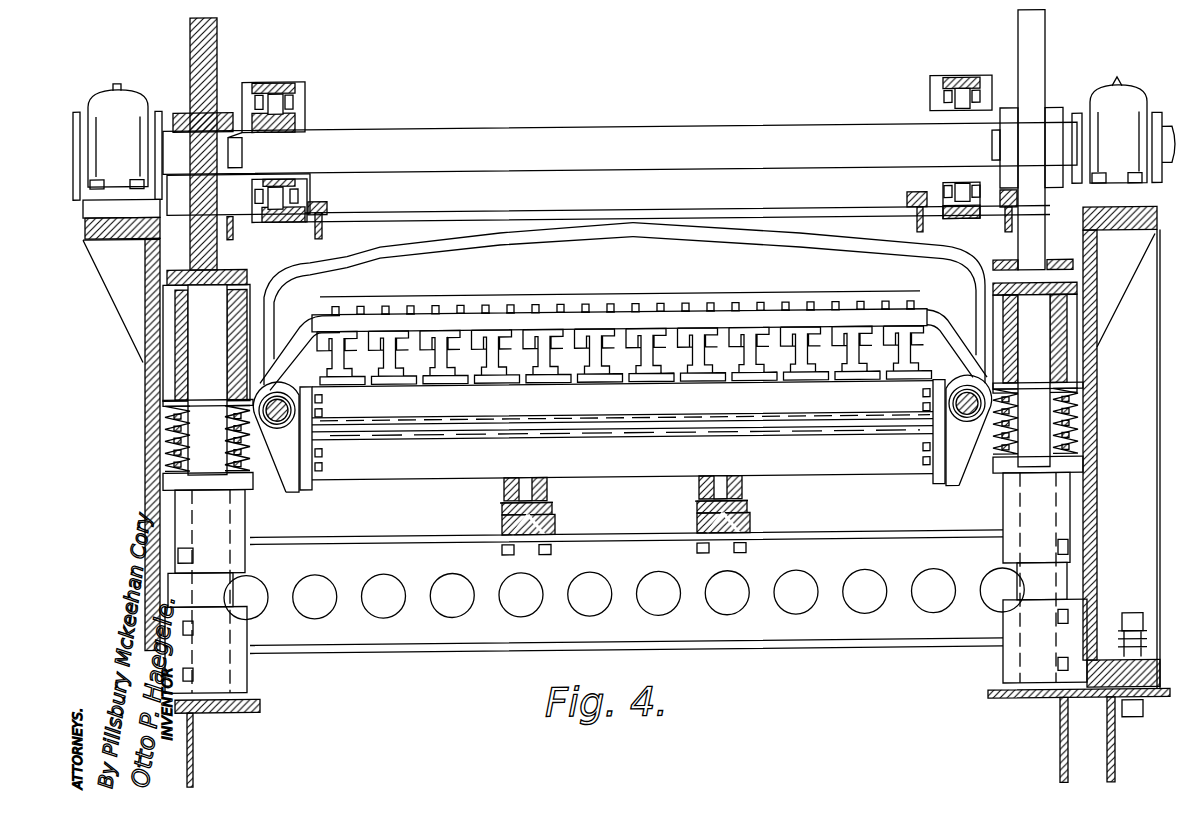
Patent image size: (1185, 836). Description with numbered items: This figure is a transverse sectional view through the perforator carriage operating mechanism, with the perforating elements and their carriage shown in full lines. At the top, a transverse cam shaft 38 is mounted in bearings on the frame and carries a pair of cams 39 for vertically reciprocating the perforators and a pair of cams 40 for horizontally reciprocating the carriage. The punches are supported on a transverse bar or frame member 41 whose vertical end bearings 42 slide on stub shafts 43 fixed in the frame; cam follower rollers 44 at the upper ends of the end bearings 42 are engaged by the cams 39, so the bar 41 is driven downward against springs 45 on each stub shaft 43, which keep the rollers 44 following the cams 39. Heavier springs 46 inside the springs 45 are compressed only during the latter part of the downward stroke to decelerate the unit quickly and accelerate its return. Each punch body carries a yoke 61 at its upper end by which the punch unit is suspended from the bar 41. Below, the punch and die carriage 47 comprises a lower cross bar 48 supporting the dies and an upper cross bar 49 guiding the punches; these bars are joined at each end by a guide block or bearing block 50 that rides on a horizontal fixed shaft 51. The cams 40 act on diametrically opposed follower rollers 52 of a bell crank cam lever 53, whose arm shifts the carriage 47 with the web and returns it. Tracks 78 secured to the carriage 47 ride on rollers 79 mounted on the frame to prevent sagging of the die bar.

The transverse cam shaft 38 is at (596, 142).
The cams 39 is at (208, 42).
The cams 40 is at (292, 118).
The transverse bar or frame member 41 is at (624, 272).
The vertical end bearings 42 is at (240, 343).
The stub shafts 43 is at (200, 373).
The cam follower rollers 44 is at (250, 288).
The springs 45 is at (165, 438).
The heavier springs 46 is at (163, 456).
The punch and die carriage 47 is at (424, 473).
The lower cross bar 48 is at (382, 470).
The upper cross bar 49 is at (388, 406).
The guide block or bearing block 50 is at (296, 470).
The horizontal fixed shafts 51 is at (277, 428).
The follower rollers 52 is at (278, 98).
The bell crank cam lever 53 is at (949, 74).
The yoke 61 is at (447, 350).
The tracks 78 is at (527, 484).
The rollers 79 is at (548, 495).